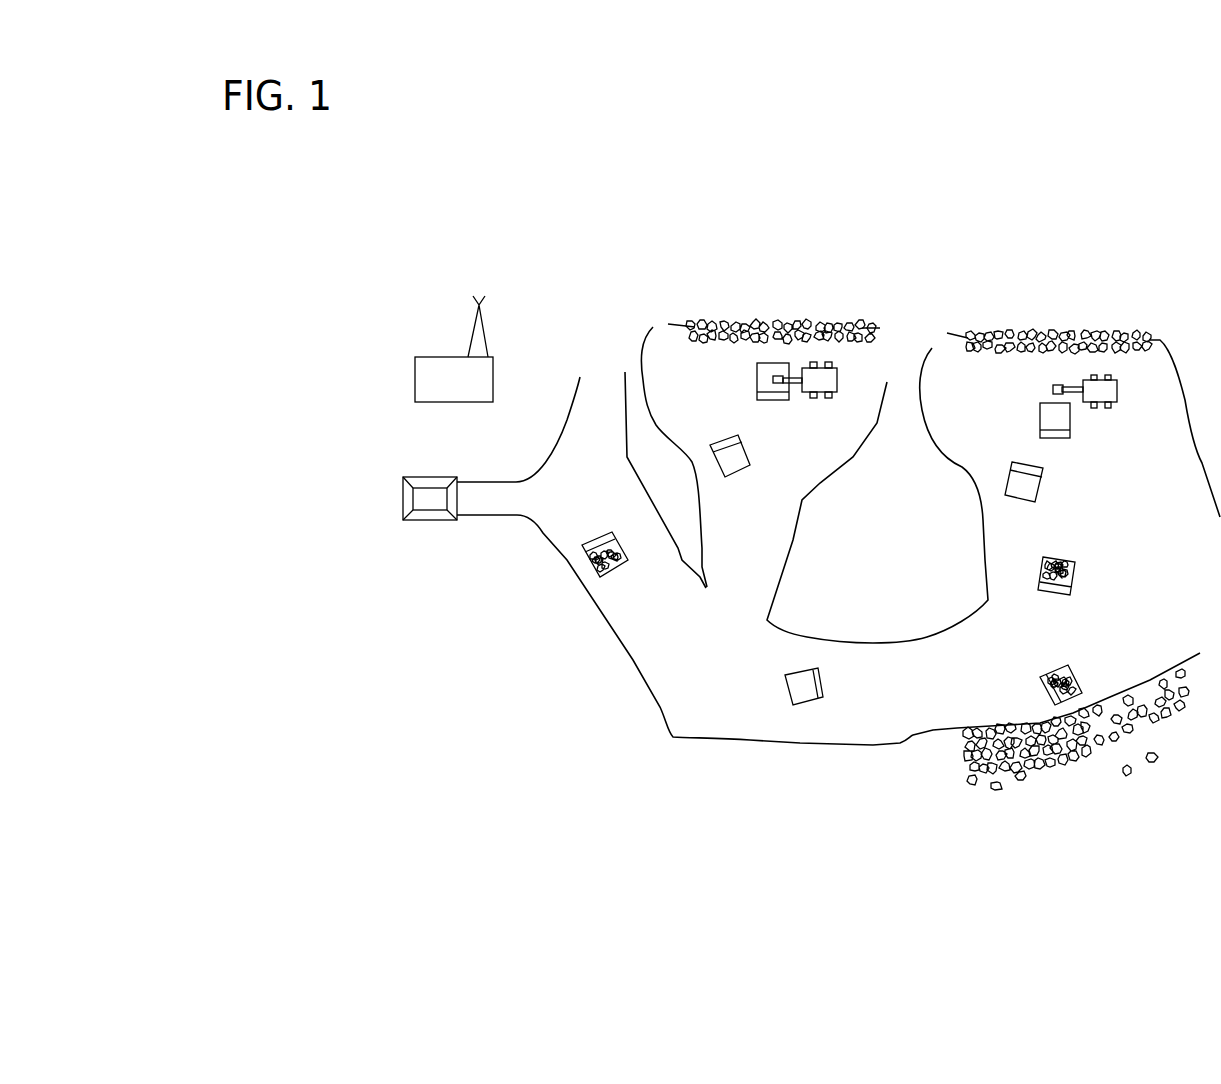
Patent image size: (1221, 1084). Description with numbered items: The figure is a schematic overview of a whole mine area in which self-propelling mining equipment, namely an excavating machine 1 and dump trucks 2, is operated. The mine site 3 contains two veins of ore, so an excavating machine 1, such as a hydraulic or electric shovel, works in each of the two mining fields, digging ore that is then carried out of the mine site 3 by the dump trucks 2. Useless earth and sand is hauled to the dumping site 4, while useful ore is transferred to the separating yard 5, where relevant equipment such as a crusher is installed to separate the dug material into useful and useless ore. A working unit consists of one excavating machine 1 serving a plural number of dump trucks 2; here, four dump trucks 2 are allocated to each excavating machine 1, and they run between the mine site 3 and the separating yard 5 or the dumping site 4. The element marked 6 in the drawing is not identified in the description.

The excavating machine 1 is at (820, 395).
The dump truck 2 is at (757, 377).
The mine site 3 is at (905, 367).
The dumping site 4 is at (1076, 725).
The separating yard 5 is at (430, 519).
The radio control station 6 is at (454, 349).